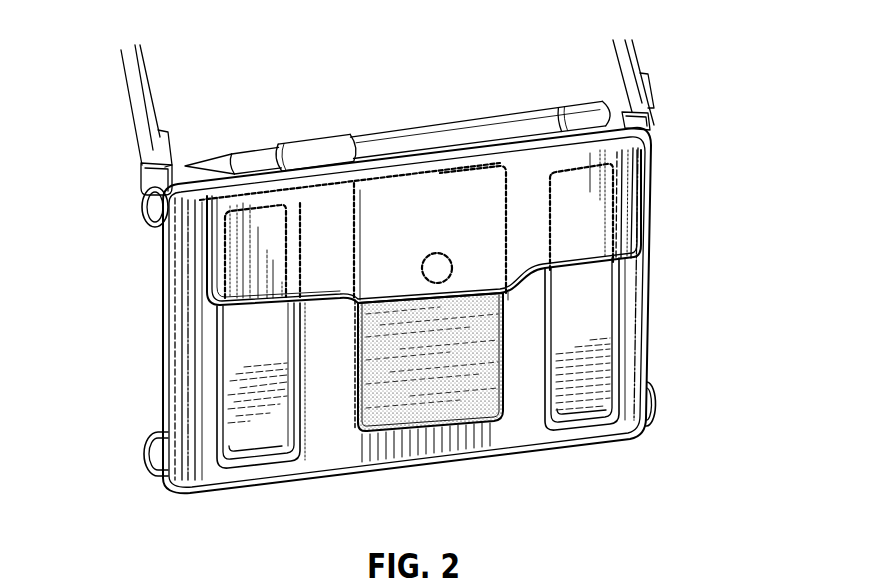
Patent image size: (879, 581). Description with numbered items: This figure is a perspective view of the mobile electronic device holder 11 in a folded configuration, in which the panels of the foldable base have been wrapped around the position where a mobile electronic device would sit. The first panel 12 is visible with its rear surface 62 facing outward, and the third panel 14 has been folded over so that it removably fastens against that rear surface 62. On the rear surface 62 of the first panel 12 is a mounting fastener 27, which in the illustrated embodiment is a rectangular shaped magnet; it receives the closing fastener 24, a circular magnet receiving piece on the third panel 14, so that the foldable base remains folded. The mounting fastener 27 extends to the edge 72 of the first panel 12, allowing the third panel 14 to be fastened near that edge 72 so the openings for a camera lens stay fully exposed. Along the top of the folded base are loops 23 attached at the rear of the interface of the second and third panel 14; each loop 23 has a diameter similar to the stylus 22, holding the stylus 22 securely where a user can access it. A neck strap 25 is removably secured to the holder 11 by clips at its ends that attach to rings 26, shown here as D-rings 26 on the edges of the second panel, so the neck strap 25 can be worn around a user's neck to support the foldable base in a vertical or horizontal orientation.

The mobile electronic device holder 11 is at (669, 82).
The first panel 12 is at (423, 454).
The third panel 14 is at (640, 222).
The stylus 22 is at (422, 130).
The loops 23 is at (304, 142).
The closing fastener 24 is at (455, 268).
The neck strap 25 is at (143, 129).
The rings 26 is at (148, 230).
The mounting fastener 27 is at (470, 350).
The rear surface 62 is at (343, 417).
The edge 72 is at (650, 145).